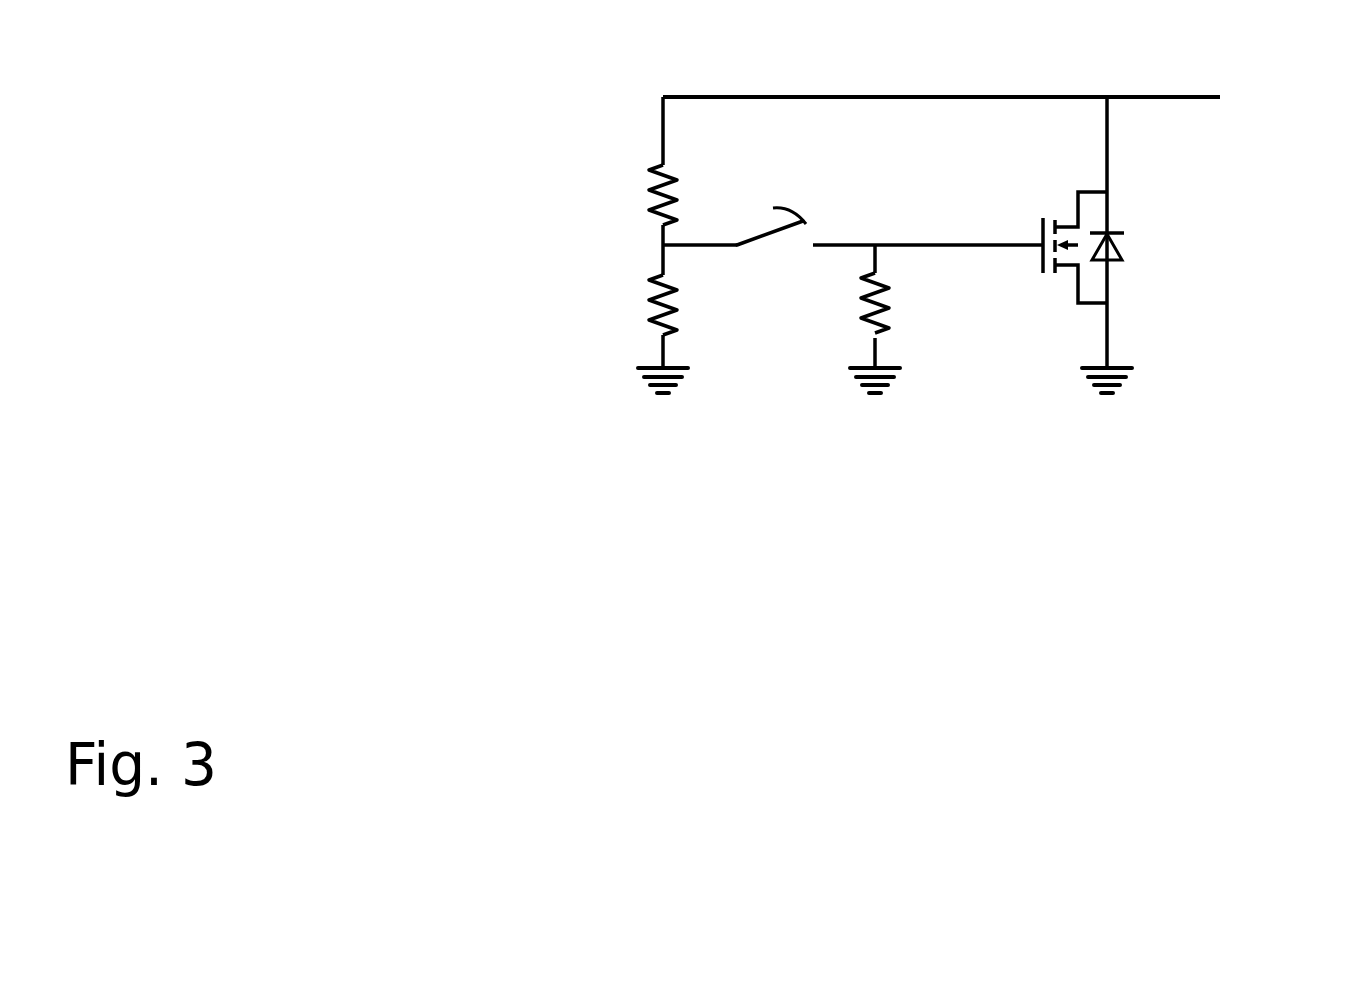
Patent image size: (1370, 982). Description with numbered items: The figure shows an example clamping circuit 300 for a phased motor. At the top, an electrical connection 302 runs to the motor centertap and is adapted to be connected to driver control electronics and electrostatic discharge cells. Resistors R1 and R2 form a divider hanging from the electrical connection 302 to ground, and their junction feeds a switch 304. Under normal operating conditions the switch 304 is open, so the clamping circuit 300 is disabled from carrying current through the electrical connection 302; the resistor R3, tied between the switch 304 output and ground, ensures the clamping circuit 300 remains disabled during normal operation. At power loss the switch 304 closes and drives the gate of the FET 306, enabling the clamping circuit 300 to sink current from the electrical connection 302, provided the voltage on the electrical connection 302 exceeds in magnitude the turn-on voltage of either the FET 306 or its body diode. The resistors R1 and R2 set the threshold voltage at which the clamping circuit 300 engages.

The clamping circuit 300 is at (458, 466).
The electrical connection 302 is at (1207, 100).
The switch 304 is at (809, 228).
The FET 306 is at (1218, 292).
The resistor R1 is at (684, 161).
The resistor R2 is at (684, 296).
The resistor R3 is at (896, 306).